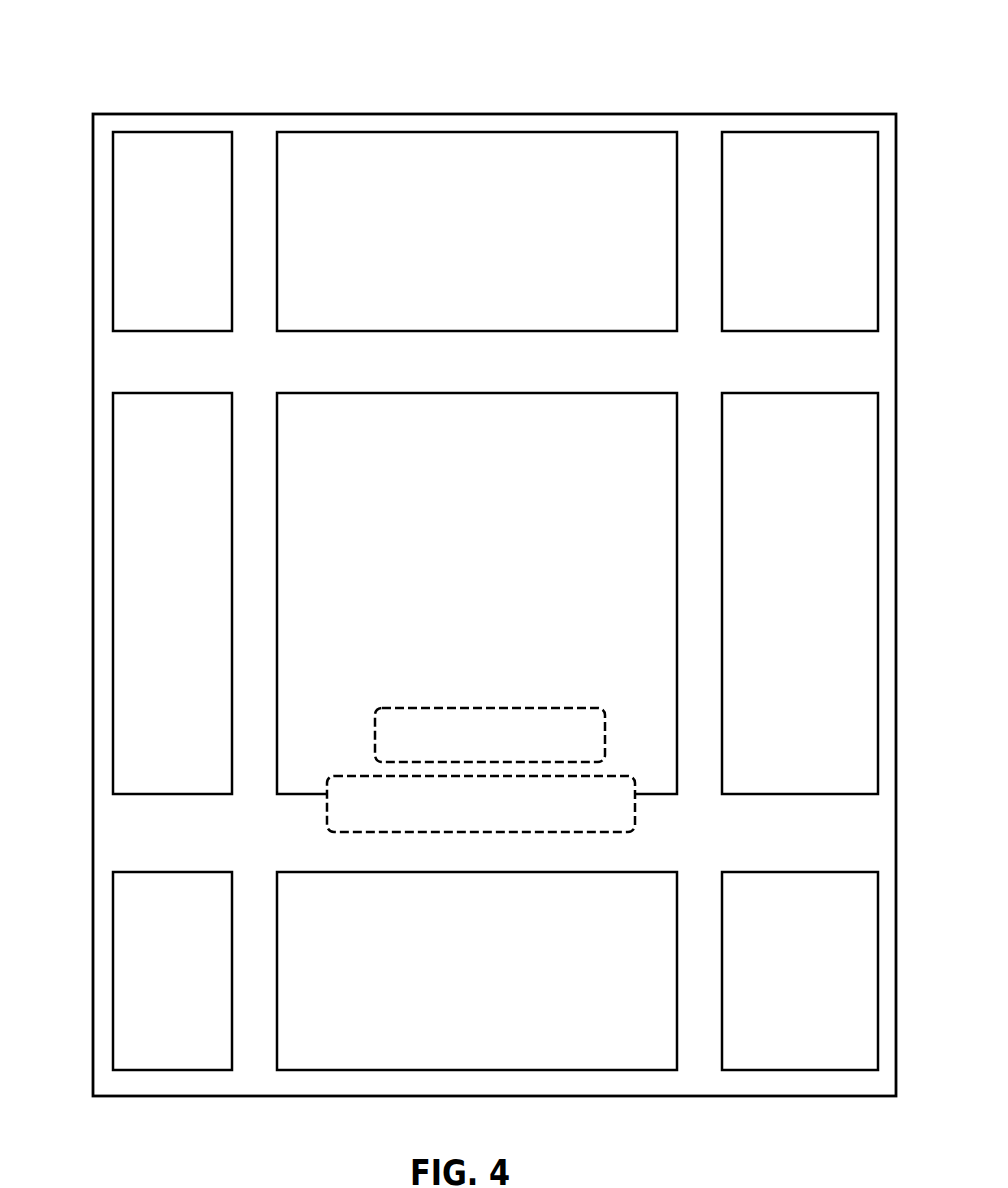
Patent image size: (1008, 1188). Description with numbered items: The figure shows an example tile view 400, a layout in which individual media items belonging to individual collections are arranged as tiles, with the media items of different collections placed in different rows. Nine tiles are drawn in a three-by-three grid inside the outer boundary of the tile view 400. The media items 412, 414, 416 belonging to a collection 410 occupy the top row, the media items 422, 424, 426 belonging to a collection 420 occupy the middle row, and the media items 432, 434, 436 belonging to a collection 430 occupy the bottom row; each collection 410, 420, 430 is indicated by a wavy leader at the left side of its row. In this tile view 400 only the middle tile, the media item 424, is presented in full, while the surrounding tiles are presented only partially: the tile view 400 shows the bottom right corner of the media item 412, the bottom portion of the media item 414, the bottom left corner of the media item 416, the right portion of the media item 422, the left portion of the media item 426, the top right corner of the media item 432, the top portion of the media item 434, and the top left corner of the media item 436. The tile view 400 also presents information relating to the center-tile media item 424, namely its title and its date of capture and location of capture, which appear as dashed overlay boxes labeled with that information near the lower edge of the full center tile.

The tile view 400 is at (518, 114).
The collection 410 is at (113, 232).
The media item 412 is at (172, 231).
The media item 414 is at (477, 231).
The media item 416 is at (800, 231).
The collection 420 is at (113, 554).
The media item 422 is at (172, 593).
The media item 424 is at (477, 593).
The media item 426 is at (800, 593).
The collection 430 is at (113, 948).
The media item 432 is at (172, 971).
The media item 434 is at (477, 971).
The media item 436 is at (800, 971).